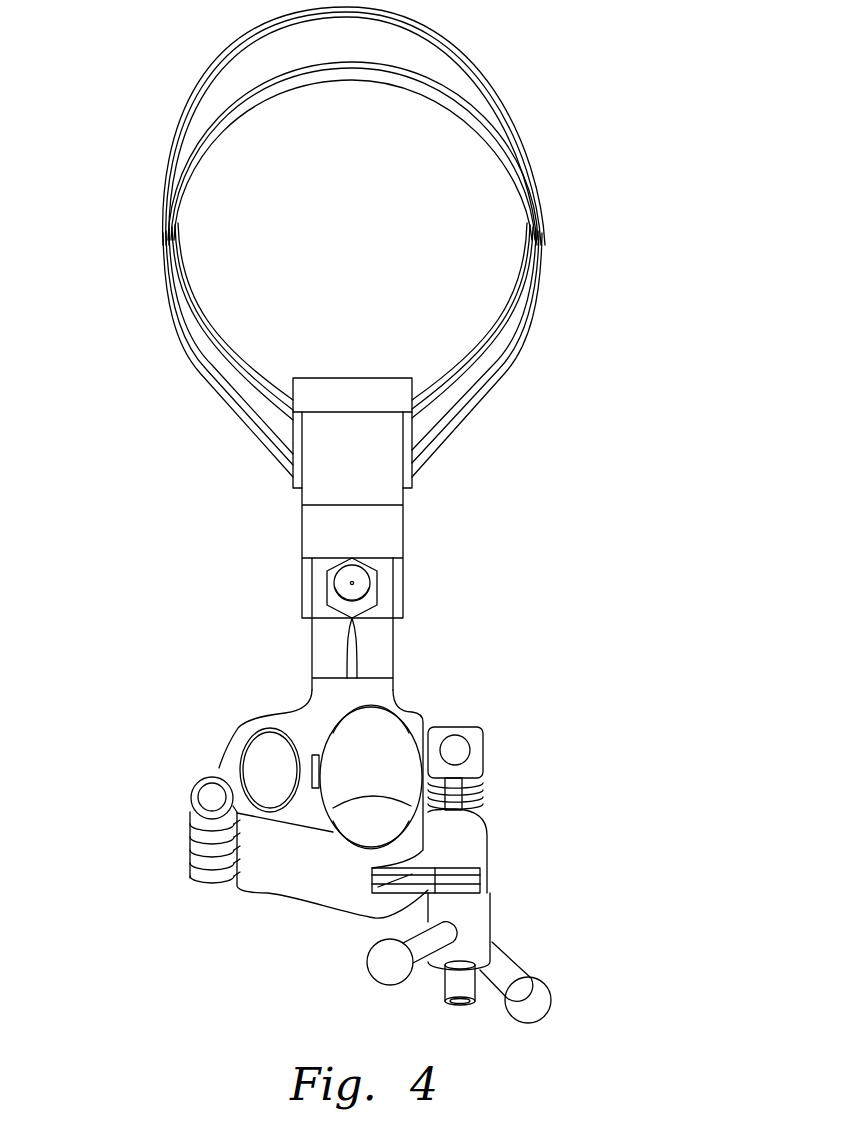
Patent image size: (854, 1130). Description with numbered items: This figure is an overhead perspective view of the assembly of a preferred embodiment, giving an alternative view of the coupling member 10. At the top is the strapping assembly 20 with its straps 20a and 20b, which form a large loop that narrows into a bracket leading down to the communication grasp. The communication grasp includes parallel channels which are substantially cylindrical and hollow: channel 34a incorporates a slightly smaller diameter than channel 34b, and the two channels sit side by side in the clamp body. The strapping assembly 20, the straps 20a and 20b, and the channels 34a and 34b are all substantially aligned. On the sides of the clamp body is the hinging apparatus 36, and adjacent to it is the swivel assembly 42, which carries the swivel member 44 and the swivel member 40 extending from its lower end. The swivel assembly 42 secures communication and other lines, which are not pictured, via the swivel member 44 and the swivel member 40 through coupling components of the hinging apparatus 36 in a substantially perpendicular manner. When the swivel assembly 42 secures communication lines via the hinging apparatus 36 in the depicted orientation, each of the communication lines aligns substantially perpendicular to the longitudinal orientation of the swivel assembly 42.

The coupling member 10 is at (590, 123).
The strapping assembly 20 is at (540, 237).
The strap 20a is at (473, 50).
The strap 20b is at (277, 100).
The channel 34a is at (288, 768).
The channel 34b is at (368, 750).
The hinging apparatus 36 is at (188, 798).
The swivel member 40 is at (550, 992).
The swivel assembly 42 is at (482, 778).
The swivel member 44 is at (367, 957).